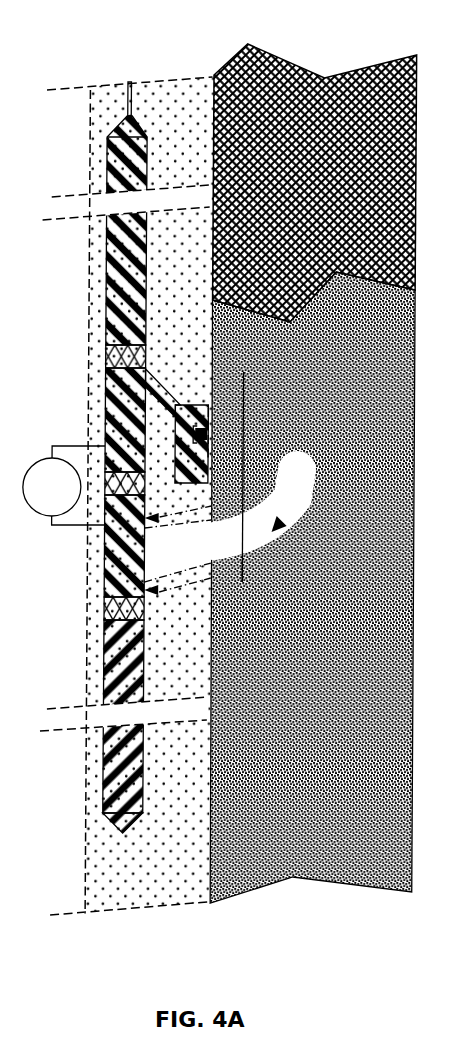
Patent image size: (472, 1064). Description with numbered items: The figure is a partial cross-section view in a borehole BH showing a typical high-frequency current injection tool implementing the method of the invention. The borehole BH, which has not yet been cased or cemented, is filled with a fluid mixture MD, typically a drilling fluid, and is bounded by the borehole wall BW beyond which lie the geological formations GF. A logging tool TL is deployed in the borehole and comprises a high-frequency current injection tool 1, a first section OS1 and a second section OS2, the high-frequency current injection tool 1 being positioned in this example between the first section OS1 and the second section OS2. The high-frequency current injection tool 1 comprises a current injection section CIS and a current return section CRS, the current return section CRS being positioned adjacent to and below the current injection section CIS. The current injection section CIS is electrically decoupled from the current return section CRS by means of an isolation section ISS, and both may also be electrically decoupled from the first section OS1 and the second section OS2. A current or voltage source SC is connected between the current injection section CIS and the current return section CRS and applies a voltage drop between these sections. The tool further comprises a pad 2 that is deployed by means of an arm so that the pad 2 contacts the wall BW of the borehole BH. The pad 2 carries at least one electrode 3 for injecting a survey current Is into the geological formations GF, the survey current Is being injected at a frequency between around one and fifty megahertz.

The borehole BH is at (167, 66).
The wall of the borehole BW is at (214, 134).
The logging tool TL is at (92, 186).
The first section OS1 is at (110, 288).
The high-frequency current injection tool 1 is at (110, 457).
The current injection section CIS is at (113, 402).
The isolation section ISS is at (110, 485).
The current or voltage source SC is at (72, 499).
The current return section CRS is at (114, 584).
The second section OS2 is at (124, 690).
The geological formations GF is at (391, 291).
The fluid mixture MD is at (197, 868).
The electrode 3 is at (246, 372).
The pad 2 is at (246, 582).
The survey current Is is at (310, 511).